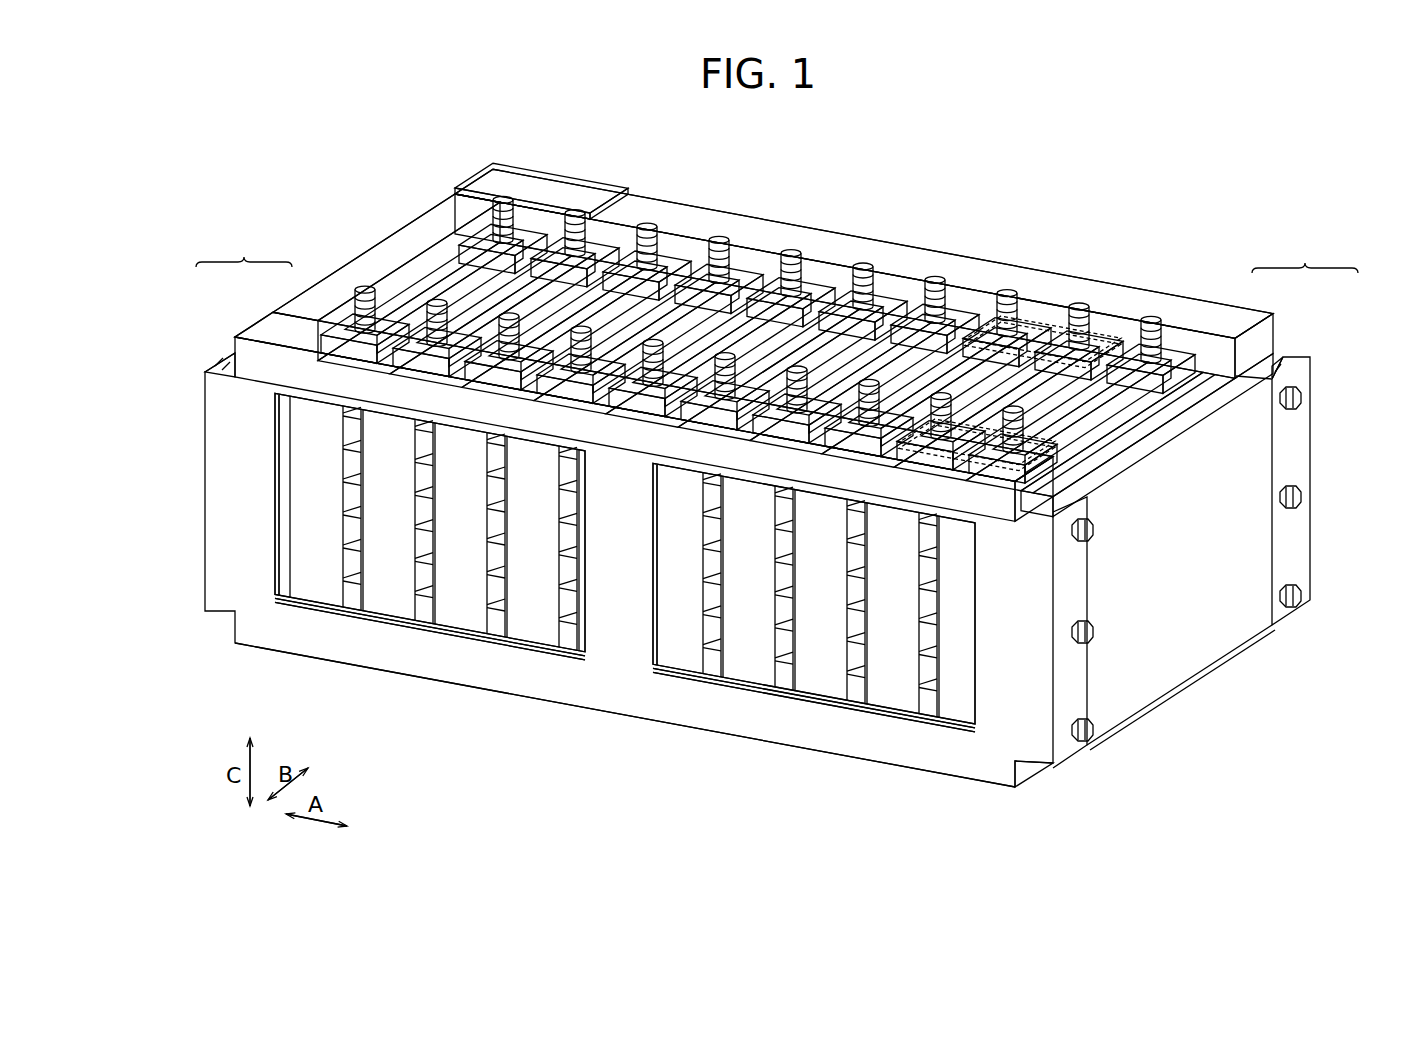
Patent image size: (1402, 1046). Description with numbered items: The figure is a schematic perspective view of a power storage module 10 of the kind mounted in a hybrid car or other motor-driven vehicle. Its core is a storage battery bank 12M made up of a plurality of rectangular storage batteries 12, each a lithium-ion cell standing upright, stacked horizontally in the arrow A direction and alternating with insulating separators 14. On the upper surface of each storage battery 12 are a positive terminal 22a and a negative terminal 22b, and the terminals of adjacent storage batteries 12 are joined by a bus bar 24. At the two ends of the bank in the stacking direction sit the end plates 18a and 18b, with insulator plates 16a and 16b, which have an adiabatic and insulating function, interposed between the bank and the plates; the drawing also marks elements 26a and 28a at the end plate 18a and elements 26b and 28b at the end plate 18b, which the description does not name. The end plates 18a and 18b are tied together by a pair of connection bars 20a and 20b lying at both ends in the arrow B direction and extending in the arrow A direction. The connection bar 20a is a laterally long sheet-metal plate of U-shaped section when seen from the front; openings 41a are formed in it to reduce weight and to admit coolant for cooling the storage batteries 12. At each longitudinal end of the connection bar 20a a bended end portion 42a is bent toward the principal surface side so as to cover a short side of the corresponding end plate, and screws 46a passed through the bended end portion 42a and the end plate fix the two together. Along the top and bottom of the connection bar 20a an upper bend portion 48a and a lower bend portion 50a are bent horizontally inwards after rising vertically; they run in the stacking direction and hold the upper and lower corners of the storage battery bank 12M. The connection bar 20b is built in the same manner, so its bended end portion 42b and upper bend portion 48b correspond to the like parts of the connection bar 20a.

The power storage module 10 is at (629, 322).
The storage battery 12 is at (746, 507).
The storage battery bank 12M is at (625, 613).
The separator 14 is at (640, 556).
The insulator plate 16a is at (1147, 386).
The insulator plate 16b is at (386, 267).
The end plate 18a is at (1305, 253).
The end plate 18b is at (244, 248).
The connection bar 20a is at (629, 579).
The connection bar 20b is at (754, 345).
The positive terminal 22a is at (758, 325).
The negative terminal 22b is at (802, 324).
The bus bar 24 is at (1010, 343).
The right corner angle 26a is at (1312, 325).
The left corner angle 26b is at (217, 318).
The right side beam 28a is at (1268, 325).
The left side beam 28b is at (354, 253).
The opening 41a is at (812, 597).
The bended end portion 42a is at (655, 553).
The bended end portion 42b is at (1322, 491).
The screw 46a is at (1199, 589).
The upper bend portion 48a is at (644, 396).
The upper bend portion 48b is at (864, 250).
The lower bend portion 50a is at (652, 742).